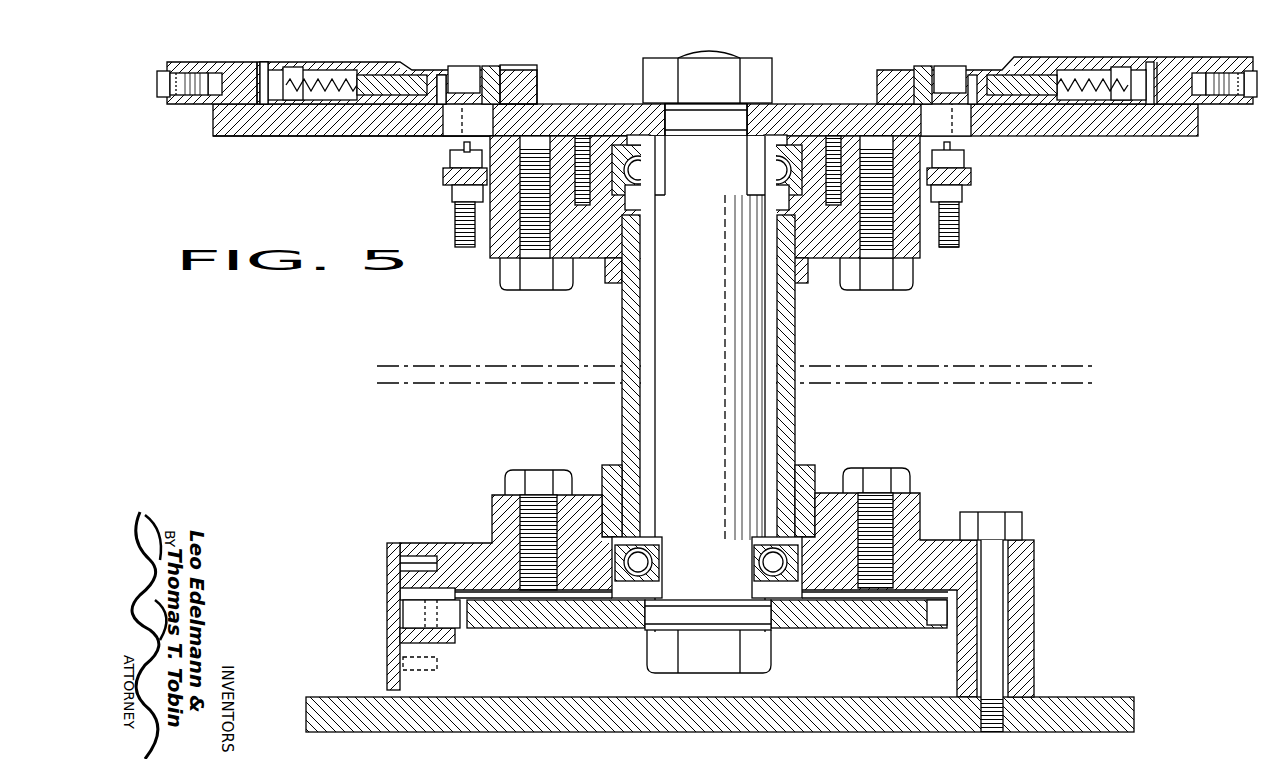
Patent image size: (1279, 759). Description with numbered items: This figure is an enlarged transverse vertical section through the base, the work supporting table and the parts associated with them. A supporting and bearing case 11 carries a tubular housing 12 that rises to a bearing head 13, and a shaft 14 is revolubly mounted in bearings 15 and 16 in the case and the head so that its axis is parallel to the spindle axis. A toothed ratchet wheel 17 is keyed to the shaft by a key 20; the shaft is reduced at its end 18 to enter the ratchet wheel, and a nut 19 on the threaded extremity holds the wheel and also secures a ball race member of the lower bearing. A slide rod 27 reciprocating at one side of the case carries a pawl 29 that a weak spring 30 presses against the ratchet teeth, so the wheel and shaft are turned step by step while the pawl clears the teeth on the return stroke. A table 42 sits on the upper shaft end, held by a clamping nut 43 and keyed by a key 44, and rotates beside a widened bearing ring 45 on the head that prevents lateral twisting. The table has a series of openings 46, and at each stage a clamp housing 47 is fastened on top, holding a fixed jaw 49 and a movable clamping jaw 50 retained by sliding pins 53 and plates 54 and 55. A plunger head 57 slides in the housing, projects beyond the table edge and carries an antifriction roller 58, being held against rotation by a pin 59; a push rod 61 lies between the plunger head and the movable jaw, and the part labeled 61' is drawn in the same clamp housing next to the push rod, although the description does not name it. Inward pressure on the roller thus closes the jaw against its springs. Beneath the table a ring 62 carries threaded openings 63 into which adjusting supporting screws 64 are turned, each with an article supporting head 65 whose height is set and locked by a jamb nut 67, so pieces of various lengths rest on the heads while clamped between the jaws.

The supporting and bearing case 11 is at (1034, 638).
The tubular housing 12 is at (622, 417).
The bearing head 13 is at (920, 270).
The shaft 14 is at (766, 333).
The bearing 15 is at (798, 629).
The bearing 16 is at (808, 118).
The toothed ratchet wheel 17 is at (533, 630).
The reduced end portion of the shaft 18 is at (748, 630).
The nut 19 is at (650, 667).
The key 20 is at (665, 613).
The slide rod 27 is at (400, 640).
The pawl 29 is at (455, 630).
The spring 30 is at (386, 614).
The table 42 is at (1068, 132).
The clamping nut 43 is at (751, 62).
The key 44 is at (673, 120).
The widened bearing ring 45 is at (952, 142).
The openings 46 is at (447, 138).
The clamp housing 47 is at (543, 86).
The fixed jaw 49 is at (510, 64).
The movable clamping jaw 50 is at (461, 66).
The sliding pins 53 is at (499, 62).
The plate 54 is at (397, 140).
The plate 55 is at (446, 64).
The plunger head 57 is at (236, 52).
The antifriction roller 58 is at (160, 84).
The pin 59 is at (266, 72).
The push rod 61 is at (392, 60).
The spring 61' is at (714, 58).
The ring 62 is at (972, 175).
The screw threaded openings 63 is at (964, 192).
The adjusting supporting screw 64 is at (960, 246).
The article supporting head 65 is at (966, 158).
The jamb nut 67 is at (960, 215).